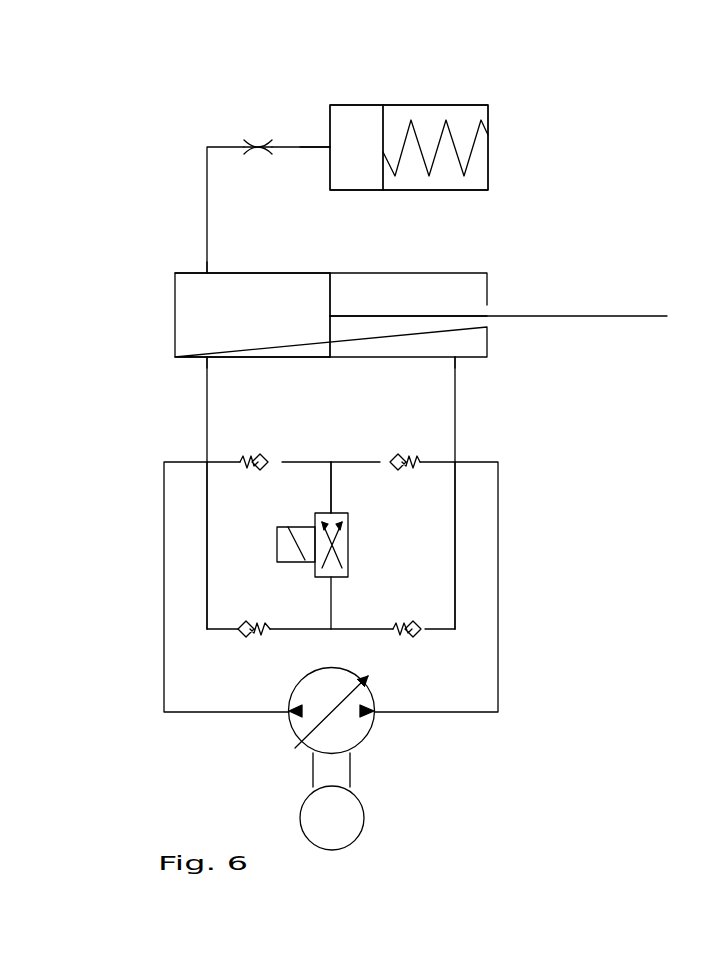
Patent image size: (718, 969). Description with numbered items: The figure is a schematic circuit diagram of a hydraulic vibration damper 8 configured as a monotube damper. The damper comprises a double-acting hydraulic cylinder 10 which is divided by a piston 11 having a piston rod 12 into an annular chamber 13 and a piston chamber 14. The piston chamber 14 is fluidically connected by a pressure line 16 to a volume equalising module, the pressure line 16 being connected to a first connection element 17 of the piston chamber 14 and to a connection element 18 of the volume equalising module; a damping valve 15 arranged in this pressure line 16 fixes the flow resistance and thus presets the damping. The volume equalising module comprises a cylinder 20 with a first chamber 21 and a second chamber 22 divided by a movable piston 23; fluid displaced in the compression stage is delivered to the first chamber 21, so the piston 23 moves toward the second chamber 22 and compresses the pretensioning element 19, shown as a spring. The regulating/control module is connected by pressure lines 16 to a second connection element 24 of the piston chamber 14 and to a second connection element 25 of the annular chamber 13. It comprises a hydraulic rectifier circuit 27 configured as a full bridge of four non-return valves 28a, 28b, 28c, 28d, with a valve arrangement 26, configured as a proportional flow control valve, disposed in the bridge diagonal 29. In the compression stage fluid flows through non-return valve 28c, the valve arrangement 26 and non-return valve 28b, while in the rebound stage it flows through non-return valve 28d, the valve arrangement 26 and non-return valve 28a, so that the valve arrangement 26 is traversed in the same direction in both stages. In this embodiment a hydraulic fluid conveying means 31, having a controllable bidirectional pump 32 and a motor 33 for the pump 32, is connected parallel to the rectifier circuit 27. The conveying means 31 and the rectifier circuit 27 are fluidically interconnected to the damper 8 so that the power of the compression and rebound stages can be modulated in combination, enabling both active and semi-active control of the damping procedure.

The hydraulic vibration damper 8 is at (613, 127).
The double-acting hydraulic cylinder 10 is at (450, 236).
The piston 11 is at (330, 290).
The piston rod 12 is at (622, 316).
The annular chamber 13 is at (487, 345).
The piston chamber 14 is at (190, 328).
The damping valve 15 is at (256, 139).
The pressure line 16 is at (207, 205).
The first connection element 17 is at (208, 270).
The connection element 18 is at (328, 153).
The pretensioning element 19 is at (446, 122).
The cylinder 20 is at (487, 113).
The first chamber 21 is at (340, 113).
The second chamber 22 is at (487, 173).
The piston 23 is at (383, 120).
The second connection element 24 is at (208, 360).
The second connection element 25 is at (450, 362).
The valve arrangement 26 is at (348, 547).
The hydraulic rectifier circuit 27 is at (465, 613).
The non-return valve 28a is at (252, 450).
The non-return valve 28b is at (408, 450).
The non-return valve 28c is at (263, 633).
The non-return valve 28d is at (393, 633).
The bridge diagonal 29 is at (331, 497).
The hydraulic fluid conveying means 31 is at (375, 777).
The bidirectional pump 32 is at (366, 727).
The motor 33 is at (355, 823).